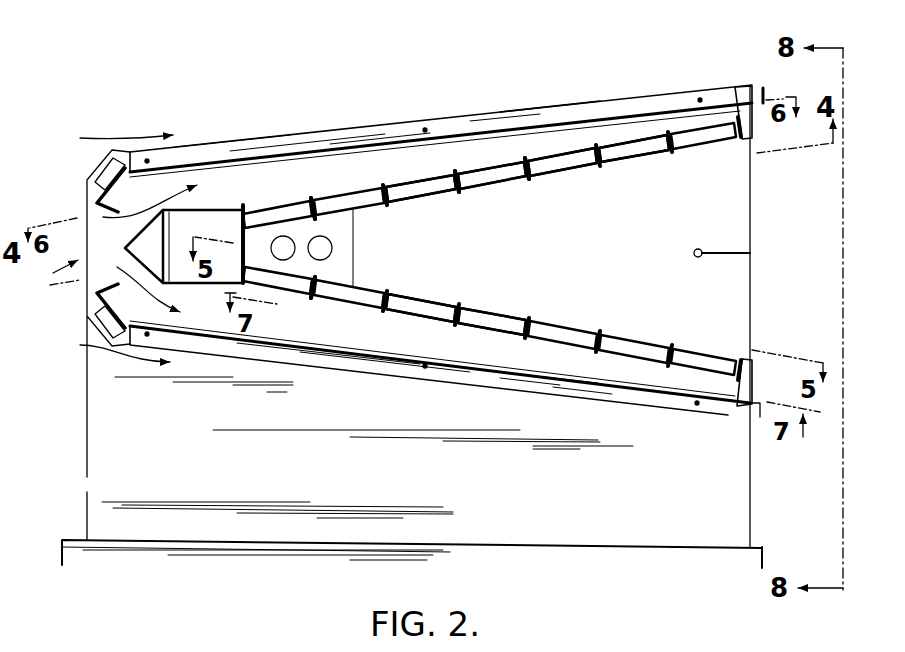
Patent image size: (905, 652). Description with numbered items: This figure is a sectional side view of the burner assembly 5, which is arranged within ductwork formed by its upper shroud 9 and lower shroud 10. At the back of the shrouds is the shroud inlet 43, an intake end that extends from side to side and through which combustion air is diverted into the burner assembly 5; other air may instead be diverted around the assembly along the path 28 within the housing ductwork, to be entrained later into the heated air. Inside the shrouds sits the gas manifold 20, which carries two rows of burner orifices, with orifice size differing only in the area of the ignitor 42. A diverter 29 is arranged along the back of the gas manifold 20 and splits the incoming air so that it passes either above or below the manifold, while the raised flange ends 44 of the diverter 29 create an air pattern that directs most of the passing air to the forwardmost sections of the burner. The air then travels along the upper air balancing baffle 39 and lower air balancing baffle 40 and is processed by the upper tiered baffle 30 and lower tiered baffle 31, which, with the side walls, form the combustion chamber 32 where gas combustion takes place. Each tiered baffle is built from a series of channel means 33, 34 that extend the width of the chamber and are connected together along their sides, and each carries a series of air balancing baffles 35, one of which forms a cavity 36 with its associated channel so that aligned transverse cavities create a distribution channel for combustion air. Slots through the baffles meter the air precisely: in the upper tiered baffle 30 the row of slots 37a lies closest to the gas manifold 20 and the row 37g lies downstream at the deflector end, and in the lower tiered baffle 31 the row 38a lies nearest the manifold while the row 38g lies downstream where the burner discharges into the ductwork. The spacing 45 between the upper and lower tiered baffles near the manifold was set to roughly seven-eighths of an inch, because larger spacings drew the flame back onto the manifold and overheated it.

The burner assembly 5 is at (554, 102).
The upper shroud 9 is at (383, 125).
The lower shroud 10 is at (372, 376).
The gas manifold 20 is at (215, 210).
The air path around the burner assembly 28 is at (110, 244).
The diverter 29 is at (144, 229).
The upper tiered baffle 30 is at (563, 172).
The lower tiered baffle 31 is at (561, 326).
The combustion chamber 32 is at (590, 256).
The channel means 33 is at (443, 192).
The channel means 34 is at (521, 181).
The air balancing baffle 35 is at (443, 187).
The cavity 36 is at (412, 190).
The lower row of slots 37a is at (298, 227).
The upper row of slots 37g is at (728, 146).
The row of slots 38a is at (298, 268).
The row of slots 38g is at (729, 358).
The upper air balancing baffle 39 is at (549, 154).
The lower air balancing baffle 40 is at (516, 336).
The ignitor 42 is at (283, 261).
The shroud inlet 43 is at (18, 268).
The raised flange ends 44 is at (187, 211).
The spacing 45 is at (249, 246).